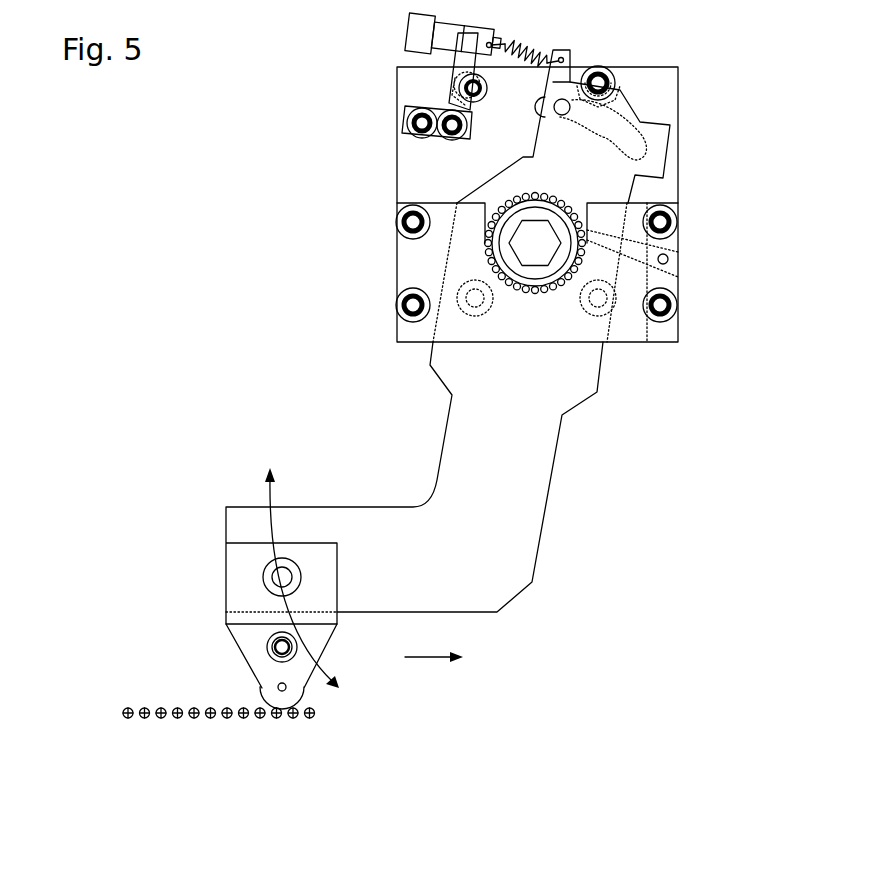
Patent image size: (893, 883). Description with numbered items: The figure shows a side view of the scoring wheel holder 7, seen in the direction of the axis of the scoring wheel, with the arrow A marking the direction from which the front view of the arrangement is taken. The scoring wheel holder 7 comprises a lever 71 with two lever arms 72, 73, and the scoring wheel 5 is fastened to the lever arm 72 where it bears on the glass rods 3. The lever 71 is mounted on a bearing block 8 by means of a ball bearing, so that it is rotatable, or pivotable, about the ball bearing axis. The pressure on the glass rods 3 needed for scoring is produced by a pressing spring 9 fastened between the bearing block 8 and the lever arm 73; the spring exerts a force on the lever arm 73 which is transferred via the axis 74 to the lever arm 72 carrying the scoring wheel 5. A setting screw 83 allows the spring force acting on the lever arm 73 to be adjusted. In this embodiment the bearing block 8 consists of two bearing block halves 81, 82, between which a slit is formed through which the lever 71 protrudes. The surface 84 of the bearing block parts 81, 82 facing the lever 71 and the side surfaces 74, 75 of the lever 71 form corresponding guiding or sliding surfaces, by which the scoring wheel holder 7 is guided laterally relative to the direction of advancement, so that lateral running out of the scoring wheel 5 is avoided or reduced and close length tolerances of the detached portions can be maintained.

The glass rods 3 is at (148, 708).
The scoring wheel 5 is at (262, 692).
The scoring wheel holder 7 is at (352, 382).
The lever 71 is at (565, 520).
The lever arm 72 is at (226, 520).
The lever arm 73 is at (640, 112).
The axis 74 is at (538, 247).
The side surface 75 is at (608, 180).
The bearing block 8 is at (326, 205).
The bearing block half 81 is at (415, 267).
The bearing block half 82 is at (397, 155).
The setting screw 83 is at (405, 30).
The surface 84 is at (428, 175).
The pressing spring 9 is at (545, 45).
The arrow A is at (120, 278).